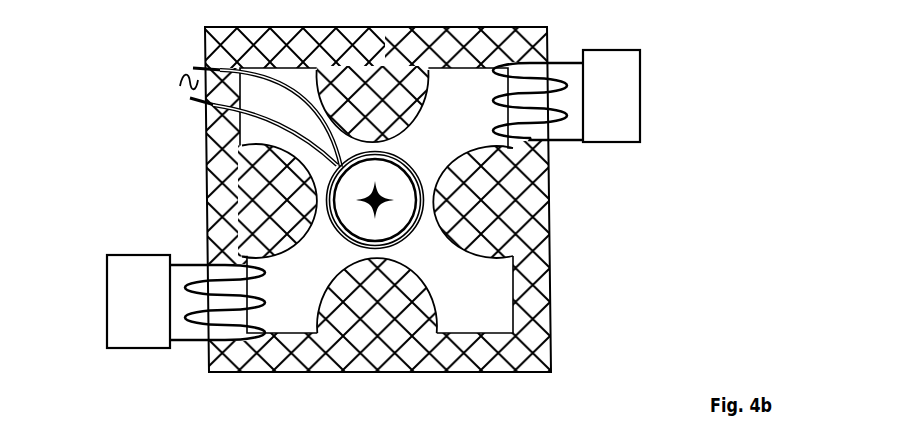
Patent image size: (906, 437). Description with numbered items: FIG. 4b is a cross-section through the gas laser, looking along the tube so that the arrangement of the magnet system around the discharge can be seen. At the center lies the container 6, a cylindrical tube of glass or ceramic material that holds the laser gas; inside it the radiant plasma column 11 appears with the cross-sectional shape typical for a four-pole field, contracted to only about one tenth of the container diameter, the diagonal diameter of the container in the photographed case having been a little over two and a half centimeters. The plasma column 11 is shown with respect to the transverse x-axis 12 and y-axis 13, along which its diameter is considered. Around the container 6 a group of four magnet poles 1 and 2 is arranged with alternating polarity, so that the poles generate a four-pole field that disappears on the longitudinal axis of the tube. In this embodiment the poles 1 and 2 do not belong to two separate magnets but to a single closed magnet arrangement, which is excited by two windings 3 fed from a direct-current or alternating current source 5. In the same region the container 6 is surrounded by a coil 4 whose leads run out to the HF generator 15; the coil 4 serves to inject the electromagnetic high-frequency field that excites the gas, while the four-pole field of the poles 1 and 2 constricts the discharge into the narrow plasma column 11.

The magnet pole 1 is at (408, 307).
The magnet pole 2 is at (480, 236).
The winding 3 is at (572, 140).
The coil 4 is at (288, 89).
The direct-current or alternating current source 5 is at (621, 109).
The container 6 is at (343, 240).
The plasma column 11 is at (374, 210).
The x-axis 12 is at (421, 240).
The y-axis 13 is at (422, 157).
The HF generator 15 is at (96, 85).